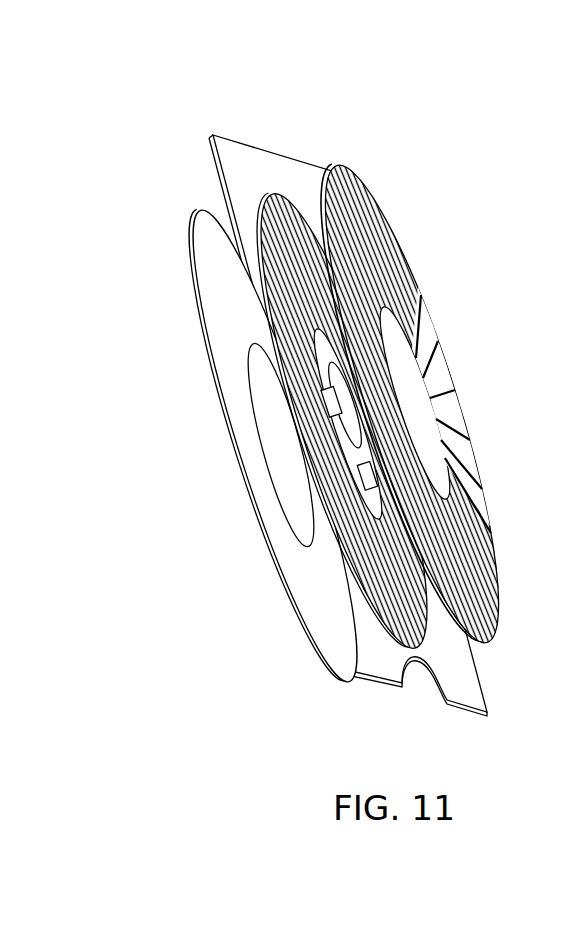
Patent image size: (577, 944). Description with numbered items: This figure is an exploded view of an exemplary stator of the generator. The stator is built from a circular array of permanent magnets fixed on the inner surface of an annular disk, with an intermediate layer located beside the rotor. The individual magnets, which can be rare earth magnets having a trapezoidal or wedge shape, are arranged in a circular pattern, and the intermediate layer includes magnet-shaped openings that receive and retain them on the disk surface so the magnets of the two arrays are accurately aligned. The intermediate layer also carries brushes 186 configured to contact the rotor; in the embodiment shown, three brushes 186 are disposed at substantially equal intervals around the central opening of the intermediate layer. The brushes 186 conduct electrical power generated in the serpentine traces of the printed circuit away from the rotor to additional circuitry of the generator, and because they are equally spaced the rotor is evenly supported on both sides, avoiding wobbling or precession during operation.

The brushes 186 is at (345, 420).